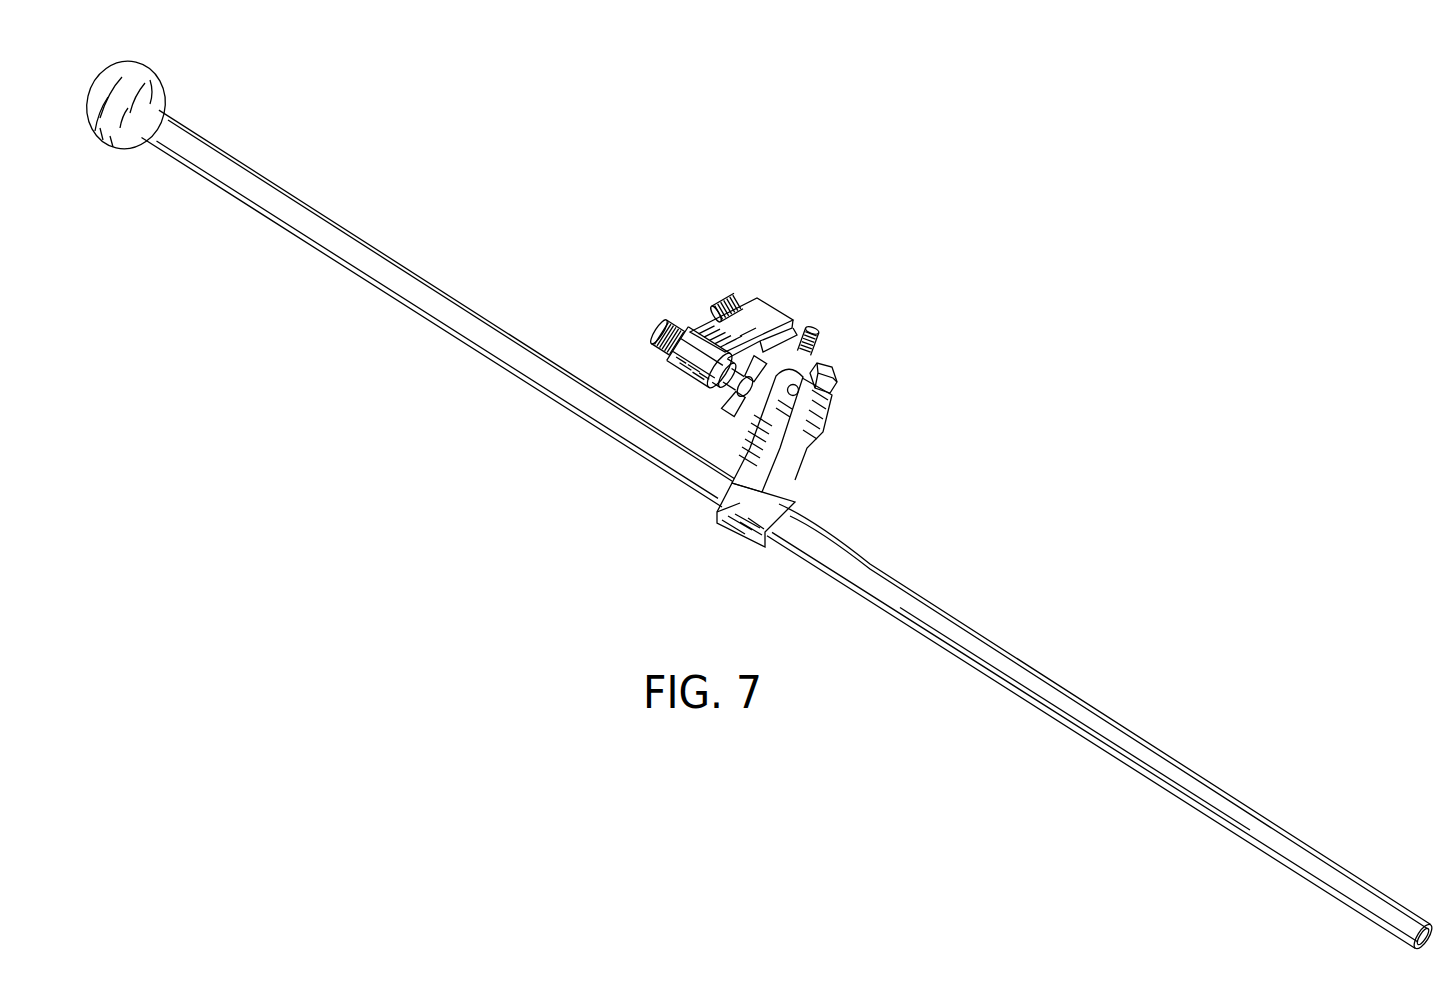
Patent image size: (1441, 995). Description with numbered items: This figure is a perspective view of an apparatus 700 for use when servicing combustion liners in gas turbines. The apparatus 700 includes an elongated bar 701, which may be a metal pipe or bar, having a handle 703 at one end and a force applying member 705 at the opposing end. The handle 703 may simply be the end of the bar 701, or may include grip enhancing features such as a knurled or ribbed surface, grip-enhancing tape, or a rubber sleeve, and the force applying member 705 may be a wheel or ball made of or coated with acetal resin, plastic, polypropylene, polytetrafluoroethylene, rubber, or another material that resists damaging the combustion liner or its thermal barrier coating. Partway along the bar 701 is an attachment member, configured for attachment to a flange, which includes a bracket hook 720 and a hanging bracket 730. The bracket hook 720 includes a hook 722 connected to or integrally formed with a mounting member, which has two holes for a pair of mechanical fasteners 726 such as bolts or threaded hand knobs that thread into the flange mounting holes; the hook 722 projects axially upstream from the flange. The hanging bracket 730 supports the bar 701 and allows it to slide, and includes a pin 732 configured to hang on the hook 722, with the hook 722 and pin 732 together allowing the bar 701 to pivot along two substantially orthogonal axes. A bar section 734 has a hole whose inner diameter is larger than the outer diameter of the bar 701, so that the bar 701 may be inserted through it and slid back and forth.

The apparatus 700 is at (970, 243).
The elongated bar 701 is at (413, 290).
The handle 703 is at (1390, 917).
The force applying member 705 is at (103, 142).
The bracket hook 720 is at (756, 318).
The hook 722 is at (840, 403).
The mechanical fasteners 726 is at (668, 327).
The hanging bracket 730 is at (760, 473).
The pin 732 is at (828, 364).
The bar section 734 is at (738, 512).